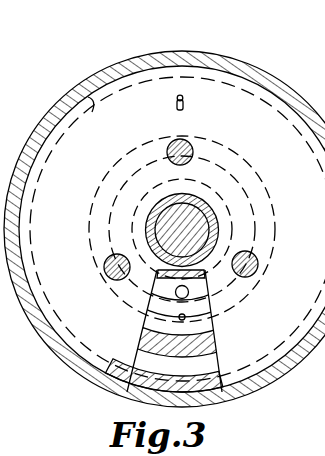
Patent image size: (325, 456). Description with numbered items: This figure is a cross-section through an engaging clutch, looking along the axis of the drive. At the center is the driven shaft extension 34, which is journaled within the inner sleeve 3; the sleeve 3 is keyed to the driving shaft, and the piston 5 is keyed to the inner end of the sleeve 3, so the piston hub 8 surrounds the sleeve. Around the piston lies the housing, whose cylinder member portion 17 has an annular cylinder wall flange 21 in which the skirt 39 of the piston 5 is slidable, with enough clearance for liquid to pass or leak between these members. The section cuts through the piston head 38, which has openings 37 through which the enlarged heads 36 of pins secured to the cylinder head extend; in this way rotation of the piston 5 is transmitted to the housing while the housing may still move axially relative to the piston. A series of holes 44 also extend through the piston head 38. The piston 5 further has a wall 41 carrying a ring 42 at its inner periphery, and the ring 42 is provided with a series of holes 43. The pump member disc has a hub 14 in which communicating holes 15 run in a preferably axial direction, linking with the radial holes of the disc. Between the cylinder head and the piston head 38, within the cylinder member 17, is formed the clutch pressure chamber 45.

The sleeve 3 is at (206, 218).
The piston 5 is at (223, 70).
The piston hub 8 is at (190, 289).
The hub 14 is at (151, 296).
The communicating holes 15 is at (210, 296).
The cylinder member portion 17 is at (204, 50).
The annular cylinder wall flange 21 is at (163, 50).
The driven shaft extension 34 is at (194, 238).
The enlarged heads 36 is at (195, 150).
The openings 37 is at (170, 147).
The piston head 38 is at (177, 229).
The skirt 39 is at (228, 394).
The wall 41 is at (112, 371).
The ring 42 is at (205, 313).
The holes 43 is at (150, 316).
The holes 44 is at (186, 100).
The clutch pressure chamber 45 is at (95, 102).